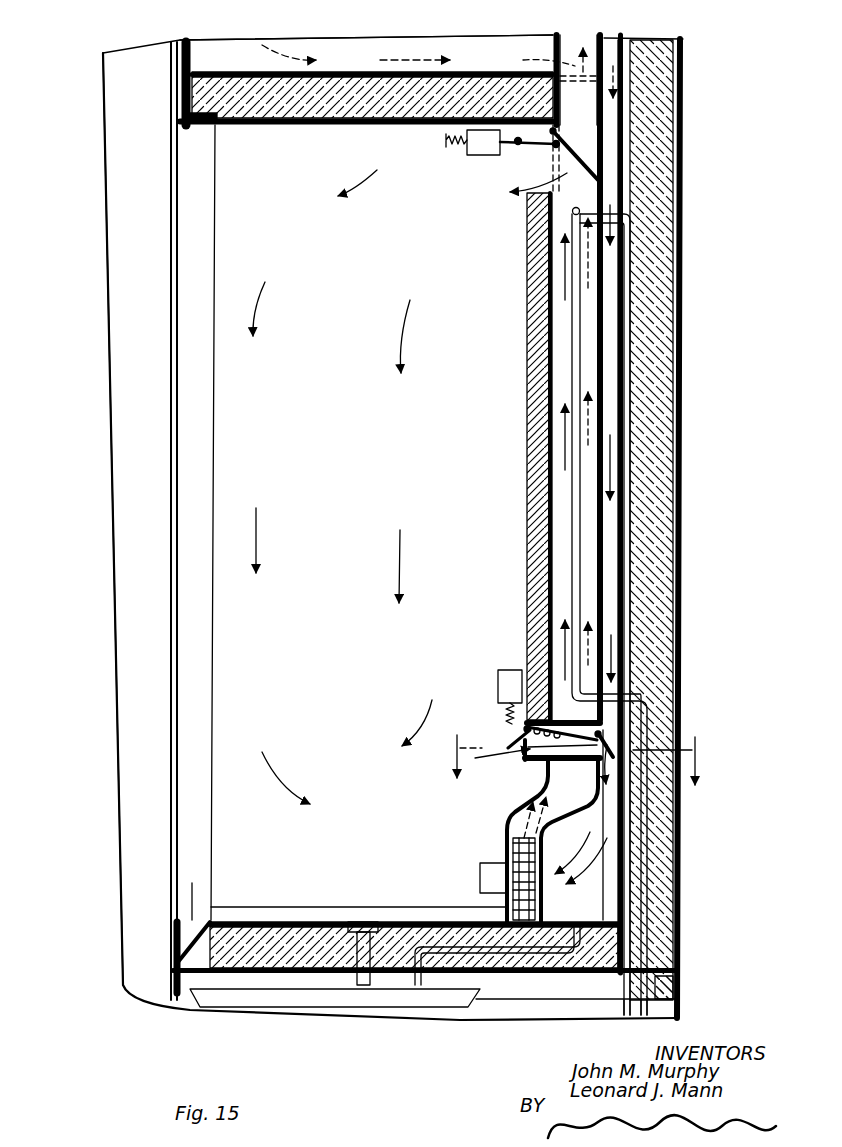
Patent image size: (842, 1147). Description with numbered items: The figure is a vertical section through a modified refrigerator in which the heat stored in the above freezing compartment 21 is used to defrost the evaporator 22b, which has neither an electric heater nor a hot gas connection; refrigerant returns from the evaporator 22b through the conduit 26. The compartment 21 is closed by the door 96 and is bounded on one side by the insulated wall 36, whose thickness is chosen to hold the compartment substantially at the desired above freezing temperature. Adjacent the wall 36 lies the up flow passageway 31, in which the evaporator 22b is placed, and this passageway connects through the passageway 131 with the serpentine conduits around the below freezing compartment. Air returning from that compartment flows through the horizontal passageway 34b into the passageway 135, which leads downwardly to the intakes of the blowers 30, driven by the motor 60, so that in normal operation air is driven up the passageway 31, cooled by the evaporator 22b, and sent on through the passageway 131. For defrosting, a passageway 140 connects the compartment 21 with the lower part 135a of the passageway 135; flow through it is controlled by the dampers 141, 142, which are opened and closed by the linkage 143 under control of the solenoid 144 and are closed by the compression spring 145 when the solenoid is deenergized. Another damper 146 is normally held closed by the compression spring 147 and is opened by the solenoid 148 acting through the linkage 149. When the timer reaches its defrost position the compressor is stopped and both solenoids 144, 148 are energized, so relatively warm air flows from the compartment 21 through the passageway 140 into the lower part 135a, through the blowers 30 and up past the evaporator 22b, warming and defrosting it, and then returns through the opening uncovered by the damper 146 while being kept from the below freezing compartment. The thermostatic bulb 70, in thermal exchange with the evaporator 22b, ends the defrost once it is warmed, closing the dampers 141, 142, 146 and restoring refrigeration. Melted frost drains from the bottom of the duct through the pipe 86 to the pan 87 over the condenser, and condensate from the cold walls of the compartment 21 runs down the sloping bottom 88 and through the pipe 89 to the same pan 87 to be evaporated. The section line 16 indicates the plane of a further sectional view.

The horizontal rearwardly directed flow conduit 34b is at (334, 62).
The passageway 131 is at (573, 52).
The passageway 135 is at (617, 150).
The lower part of passageway 135a is at (607, 866).
The damper 146 is at (586, 163).
The compression spring 147 is at (460, 148).
The solenoid 148 is at (470, 156).
The linkage 149 is at (535, 150).
The thermostatic bulb 70 is at (573, 213).
The up flow conduit 31 is at (563, 320).
The evaporator 22b is at (578, 366).
The above freezing compartment 21 is at (385, 452).
The insulated wall 36 is at (527, 466).
The door 96 is at (128, 408).
The solenoid 144 is at (510, 670).
The compression spring 145 is at (508, 710).
The damper 141 is at (507, 748).
The damper 142 is at (600, 736).
The linkage 143 is at (568, 738).
The passageway 140 is at (575, 760).
The blower 30 is at (560, 896).
The motor 60 is at (480, 878).
The sloping bottom 88 is at (283, 922).
The pipe 89 is at (358, 922).
The pipe 86 is at (437, 948).
The pan 87 is at (278, 1002).
The conduit 26 is at (630, 1016).
The section line 16- 16 is at (575, 760).